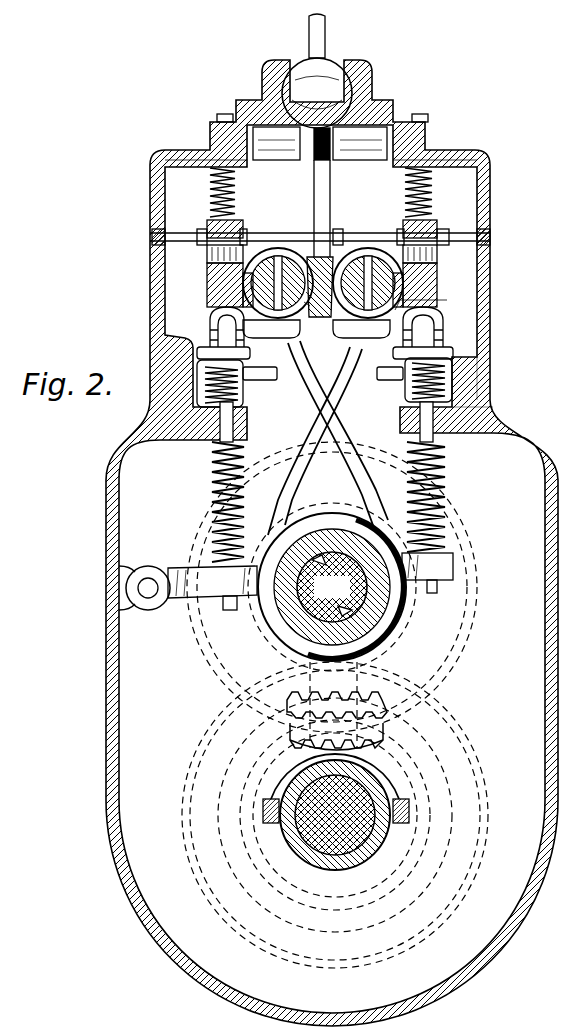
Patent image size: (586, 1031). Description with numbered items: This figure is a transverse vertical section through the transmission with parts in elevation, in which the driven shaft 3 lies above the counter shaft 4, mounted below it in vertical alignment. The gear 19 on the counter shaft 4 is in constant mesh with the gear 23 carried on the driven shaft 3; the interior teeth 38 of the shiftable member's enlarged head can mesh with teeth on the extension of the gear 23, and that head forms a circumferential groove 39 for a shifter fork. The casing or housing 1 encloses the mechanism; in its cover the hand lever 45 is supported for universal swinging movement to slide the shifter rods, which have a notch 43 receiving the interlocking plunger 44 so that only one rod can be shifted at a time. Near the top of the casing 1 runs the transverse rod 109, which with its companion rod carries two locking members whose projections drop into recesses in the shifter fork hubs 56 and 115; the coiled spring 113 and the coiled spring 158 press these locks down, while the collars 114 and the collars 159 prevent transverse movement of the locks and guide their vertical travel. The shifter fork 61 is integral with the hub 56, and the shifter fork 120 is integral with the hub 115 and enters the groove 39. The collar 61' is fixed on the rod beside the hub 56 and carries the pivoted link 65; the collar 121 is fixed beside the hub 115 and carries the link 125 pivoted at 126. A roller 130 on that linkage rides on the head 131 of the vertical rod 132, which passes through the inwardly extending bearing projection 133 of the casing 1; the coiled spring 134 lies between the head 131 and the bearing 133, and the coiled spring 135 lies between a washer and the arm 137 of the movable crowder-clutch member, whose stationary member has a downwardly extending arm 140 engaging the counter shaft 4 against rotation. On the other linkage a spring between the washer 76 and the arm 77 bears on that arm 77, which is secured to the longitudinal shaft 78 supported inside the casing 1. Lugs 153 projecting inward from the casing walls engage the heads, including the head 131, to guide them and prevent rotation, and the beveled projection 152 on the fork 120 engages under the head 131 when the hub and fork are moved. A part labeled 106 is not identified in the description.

The transmission casing 1 is at (548, 655).
The driven shaft 3 is at (352, 587).
The counter shaft 4 is at (328, 868).
The gear 19 is at (384, 735).
The gear 23 is at (368, 702).
The interior teeth 38 is at (406, 602).
The circumferentially extending groove 39 is at (402, 624).
The notch or recess 43 is at (316, 333).
The interlocking plunger 44 is at (368, 250).
The hand lever 45 is at (330, 42).
The shifter fork hub 56 is at (280, 248).
The shifter fork 61 is at (338, 434).
The collar 61' is at (321, 295).
The link 65 is at (209, 315).
The washer 76 is at (212, 462).
The arm 77 is at (226, 610).
The longitudinally extending shaft 78 is at (150, 580).
The left spring plate 106 is at (258, 382).
The rod 109 is at (331, 215).
The coiled spring 113 is at (236, 196).
The collars 114 is at (198, 236).
The shifter fork hub 115 is at (340, 234).
The shifter fork 120 is at (328, 438).
The collar 121 is at (360, 355).
The link 125 is at (448, 310).
The pivotal connection 126 is at (436, 280).
The roller 130 is at (452, 352).
The head 131 is at (478, 372).
The vertically extending rod 132 is at (482, 406).
The bearing projection 133 is at (448, 418).
The coiled spring 134 is at (452, 375).
The coiled spring 135 is at (448, 508).
The arm 137 is at (453, 566).
The downwardly extending arm 140 is at (408, 792).
The beveled projection 152 is at (395, 382).
The lugs or projections 153 is at (425, 312).
The coiled spring 158 is at (403, 200).
The collars 159 is at (440, 237).